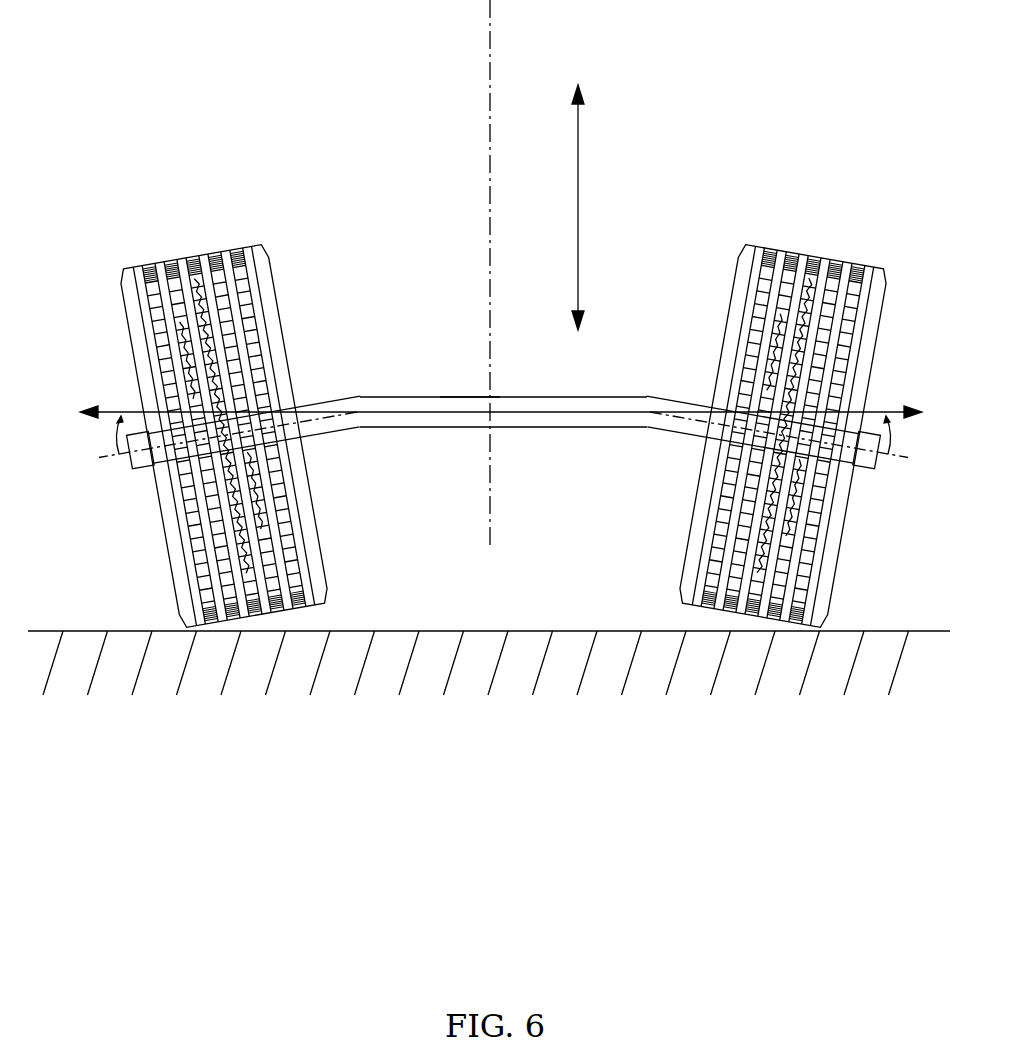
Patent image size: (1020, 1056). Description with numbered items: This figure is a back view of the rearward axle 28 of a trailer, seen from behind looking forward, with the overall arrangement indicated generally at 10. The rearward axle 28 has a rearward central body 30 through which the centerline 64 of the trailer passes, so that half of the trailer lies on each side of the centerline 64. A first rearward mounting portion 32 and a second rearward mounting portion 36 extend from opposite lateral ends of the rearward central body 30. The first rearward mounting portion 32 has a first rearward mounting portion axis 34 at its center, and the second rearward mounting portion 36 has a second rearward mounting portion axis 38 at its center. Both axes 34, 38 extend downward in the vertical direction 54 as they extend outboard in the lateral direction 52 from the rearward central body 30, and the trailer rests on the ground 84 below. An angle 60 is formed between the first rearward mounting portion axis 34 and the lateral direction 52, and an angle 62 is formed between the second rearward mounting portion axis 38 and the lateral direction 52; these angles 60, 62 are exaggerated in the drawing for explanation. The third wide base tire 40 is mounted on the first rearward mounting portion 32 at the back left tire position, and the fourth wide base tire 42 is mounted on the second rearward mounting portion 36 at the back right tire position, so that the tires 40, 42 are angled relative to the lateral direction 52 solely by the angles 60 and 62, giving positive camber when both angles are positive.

The vehicle axle assembly 10 is at (712, 200).
The rearward axle 28 is at (425, 397).
The rearward central body 30 is at (471, 397).
The first rearward mounting portion 32 is at (322, 437).
The first rearward mounting portion axis 34 is at (150, 462).
The second rearward mounting portion 36 is at (688, 432).
The second rearward mounting portion axis 38 is at (860, 462).
The third wide base tire 40 is at (174, 271).
The fourth wide base tire 42 is at (837, 270).
The lateral direction 52 is at (522, 412).
The vertical direction 54 is at (577, 195).
The angle 60 is at (122, 440).
The angle 62 is at (890, 443).
The centerline 64 is at (490, 272).
The ground 84 is at (429, 630).